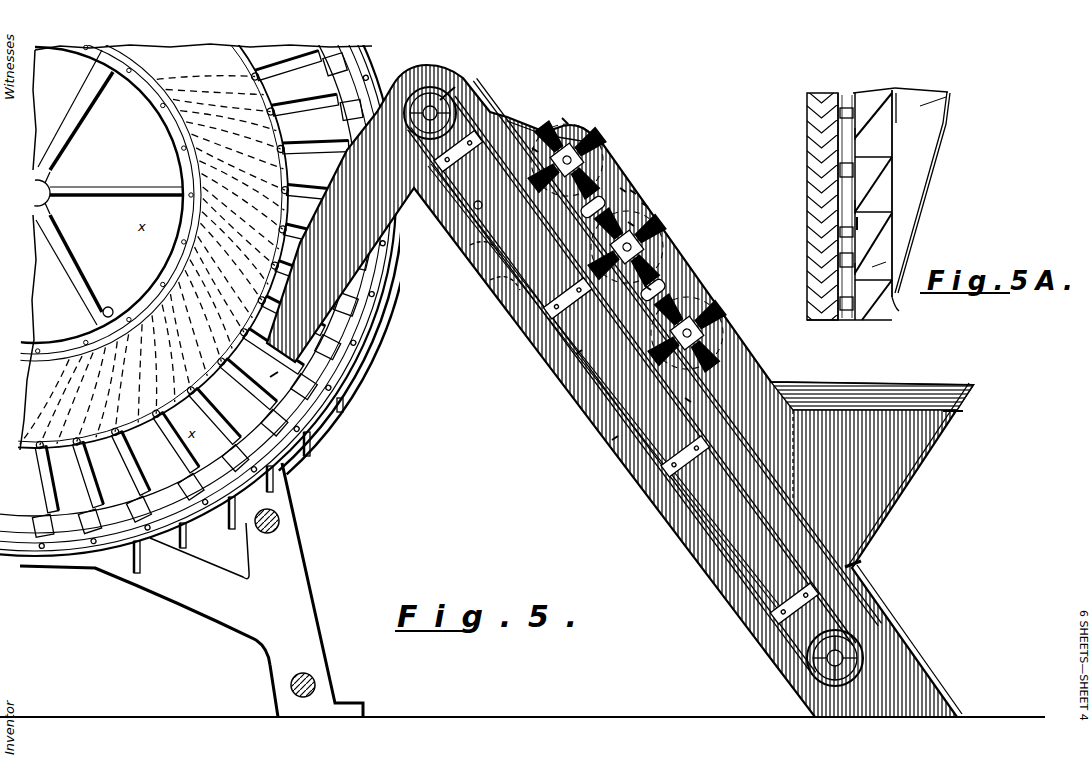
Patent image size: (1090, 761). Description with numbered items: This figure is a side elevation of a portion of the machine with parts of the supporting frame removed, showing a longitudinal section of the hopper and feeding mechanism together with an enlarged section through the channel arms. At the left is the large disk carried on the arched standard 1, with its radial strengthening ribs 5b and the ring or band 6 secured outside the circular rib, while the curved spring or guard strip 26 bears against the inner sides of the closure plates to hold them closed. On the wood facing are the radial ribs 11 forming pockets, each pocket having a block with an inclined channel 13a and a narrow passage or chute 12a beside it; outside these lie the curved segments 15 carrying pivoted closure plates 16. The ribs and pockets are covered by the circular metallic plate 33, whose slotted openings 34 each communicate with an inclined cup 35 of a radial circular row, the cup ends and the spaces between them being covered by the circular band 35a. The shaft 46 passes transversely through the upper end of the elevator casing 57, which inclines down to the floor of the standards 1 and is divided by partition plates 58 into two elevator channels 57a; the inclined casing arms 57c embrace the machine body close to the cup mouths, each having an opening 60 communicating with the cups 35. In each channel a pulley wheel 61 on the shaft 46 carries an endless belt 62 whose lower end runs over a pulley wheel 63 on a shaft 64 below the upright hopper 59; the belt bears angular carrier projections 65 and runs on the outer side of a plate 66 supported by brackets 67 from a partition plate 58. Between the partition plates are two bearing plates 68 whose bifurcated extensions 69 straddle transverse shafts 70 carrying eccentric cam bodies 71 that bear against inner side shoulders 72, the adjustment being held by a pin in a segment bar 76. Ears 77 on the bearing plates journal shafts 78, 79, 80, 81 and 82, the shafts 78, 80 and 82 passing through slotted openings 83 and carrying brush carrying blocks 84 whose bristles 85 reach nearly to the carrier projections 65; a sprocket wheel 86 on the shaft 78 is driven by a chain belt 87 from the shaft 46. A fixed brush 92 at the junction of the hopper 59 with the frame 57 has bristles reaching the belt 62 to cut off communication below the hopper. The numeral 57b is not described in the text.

In FIG. 5, the standard 1 is at (284, 563).
In FIG. 5, the strengthening rib 5b is at (122, 188).
In FIG. 5, the ring or band 6 is at (180, 174).
In FIG. 5, the rib 11 is at (181, 208).
In FIG. 5A, the rib 11 is at (838, 147).
In FIG. 5A, the passage or chute 12a is at (840, 163).
In FIG. 5A, the inclined channel 13a is at (840, 189).
In FIG. 5, the curved segment 15 is at (124, 570).
In FIG. 5, the closure plate 16 is at (312, 447).
In FIG. 5, the curved spring or guard strip 26 is at (120, 218).
In FIG. 5, the circular metallic plate 33 is at (58, 357).
In FIG. 5A, the circular metallic plate 33 is at (858, 217).
In FIG. 5, the slotted opening 34 is at (352, 321).
In FIG. 5A, the slotted opening 34 is at (840, 193).
In FIG. 5, the inclined cup 35 is at (204, 274).
In FIG. 5A, the inclined cup 35 is at (873, 163).
In FIG. 5A, the circular band 35a is at (876, 270).
In FIG. 5, the shaft 46 is at (455, 87).
In FIG. 5, the elevator casing 57 is at (641, 277).
In FIG. 5, the elevator channel 57a is at (530, 327).
In FIG. 5, the curved track 57b is at (391, 284).
In FIG. 5A, the curved track 57b is at (930, 112).
In FIG. 5A, the casing arm 57c is at (948, 113).
In FIG. 5, the partition plate 58 is at (643, 425).
In FIG. 5, the hopper 59 is at (890, 483).
In FIG. 5, the opening 60 is at (272, 377).
In FIG. 5A, the opening 60 is at (895, 180).
In FIG. 5, the belt or pulley wheel 61 is at (440, 98).
In FIG. 5, the endless belt 62 is at (693, 523).
In FIG. 5, the belt or pulley wheel 63 is at (800, 650).
In FIG. 5, the shaft 64 is at (852, 660).
In FIG. 5, the carrier projection 65 is at (637, 470).
In FIG. 5, the plate 66 is at (688, 400).
In FIG. 5, the bracket 67 is at (578, 352).
In FIG. 5, the bearing plate 68 is at (634, 193).
In FIG. 5, the bifurcated extension 69 is at (472, 258).
In FIG. 5, the transverse shaft 70 is at (614, 438).
In FIG. 5, the cam body 71 is at (535, 150).
In FIG. 5, the inner side shoulder 72 is at (488, 294).
In FIG. 5, the segment bar 76 is at (475, 207).
In FIG. 5, the ear 77 is at (645, 205).
In FIG. 5, the shaft 78 is at (602, 170).
In FIG. 5, the shaft 79 is at (623, 190).
In FIG. 5, the shaft 80 is at (630, 224).
In FIG. 5, the shaft 81 is at (648, 288).
In FIG. 5, the shaft 82 is at (735, 320).
In FIG. 5, the slotted opening 83 is at (607, 200).
In FIG. 5, the brush carrying block 84 is at (570, 140).
In FIG. 5, the brush bristles 85 is at (580, 155).
In FIG. 5, the sprocket wheel 86 is at (565, 120).
In FIG. 5, the chain belt 87 is at (513, 118).
In FIG. 5, the fixed brush 92 is at (857, 570).